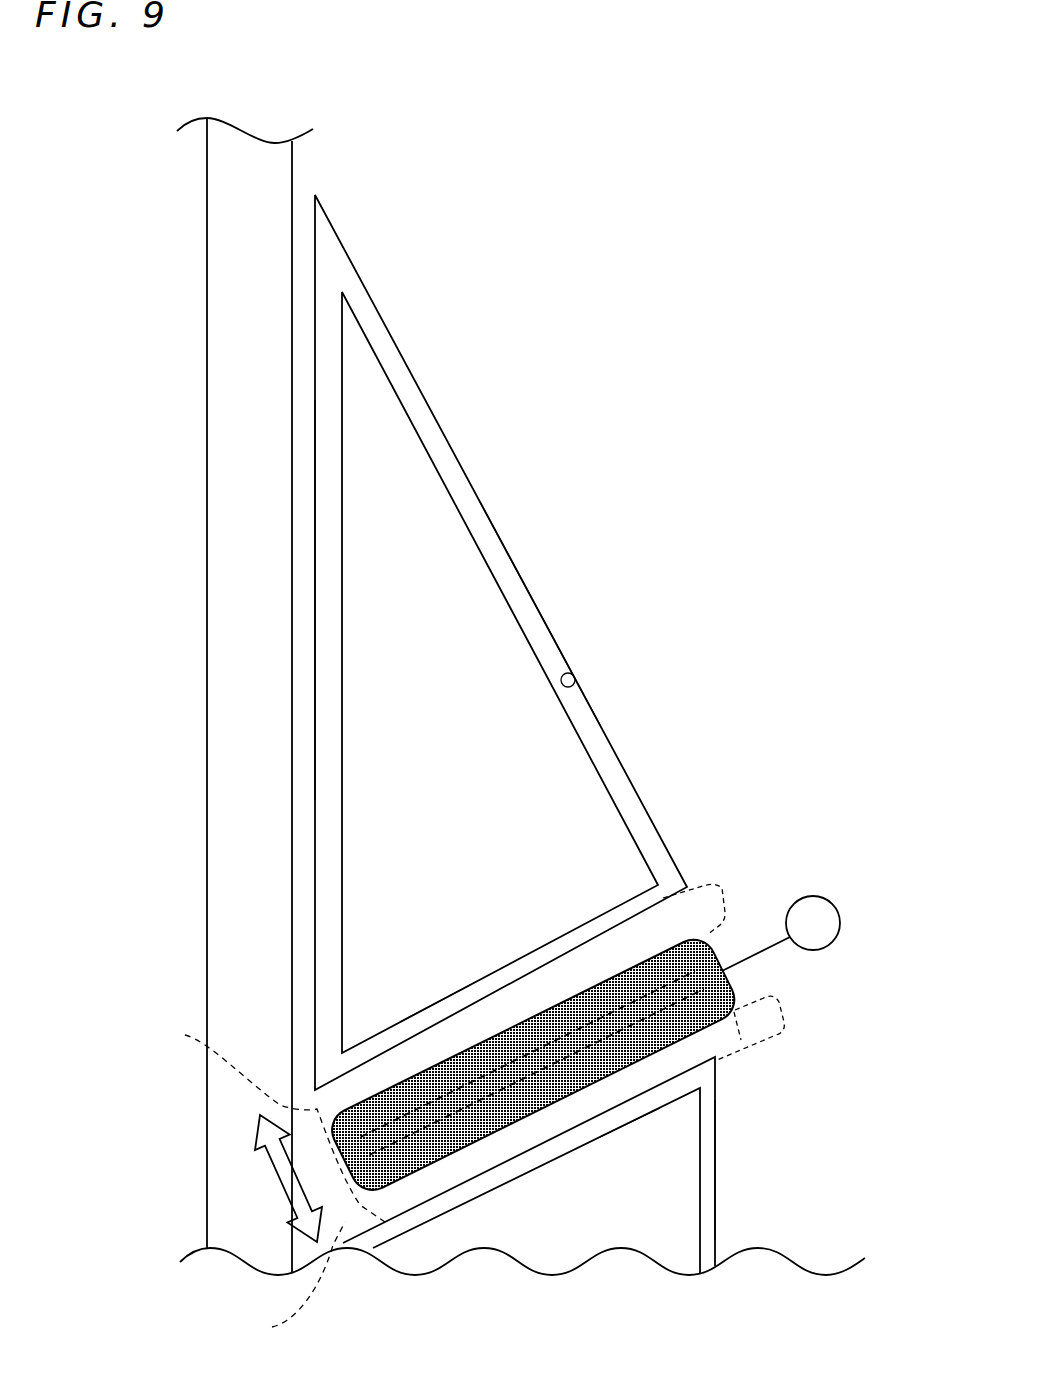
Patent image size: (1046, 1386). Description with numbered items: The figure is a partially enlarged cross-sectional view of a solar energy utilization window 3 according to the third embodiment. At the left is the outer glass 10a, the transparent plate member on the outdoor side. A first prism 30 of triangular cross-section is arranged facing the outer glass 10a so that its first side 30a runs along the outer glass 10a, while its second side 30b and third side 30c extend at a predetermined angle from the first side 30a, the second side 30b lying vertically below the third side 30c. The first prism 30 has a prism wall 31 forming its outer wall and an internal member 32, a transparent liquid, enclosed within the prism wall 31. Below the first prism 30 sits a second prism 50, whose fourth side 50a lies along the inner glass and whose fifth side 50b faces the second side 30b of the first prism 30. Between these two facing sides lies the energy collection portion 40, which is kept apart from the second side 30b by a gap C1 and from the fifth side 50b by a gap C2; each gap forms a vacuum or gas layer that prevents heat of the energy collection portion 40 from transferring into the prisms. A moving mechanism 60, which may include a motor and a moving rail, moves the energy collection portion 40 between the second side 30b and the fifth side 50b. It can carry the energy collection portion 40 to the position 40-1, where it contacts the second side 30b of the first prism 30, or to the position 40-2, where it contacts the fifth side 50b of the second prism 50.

The solar energy utilization window 3 is at (592, 172).
The outer glass 10a is at (221, 246).
The first prism 30 is at (433, 340).
The first side 30a is at (318, 607).
The second side 30b is at (425, 1025).
The third side 30c is at (568, 673).
The prism wall 31 is at (538, 647).
The internal member 32 is at (468, 595).
The energy collection portion 40 is at (621, 967).
The position of the energy collection portion in contact with the second side 40-1 is at (251, 1133).
The position of the energy collection portion in contact with the fifth side 40-2 is at (276, 1285).
The second prism 50 is at (712, 1238).
The fourth side 50a is at (714, 1204).
The fifth side 50b is at (607, 1103).
The moving mechanism 60 is at (826, 898).
The gap C1 is at (717, 906).
The gap C2 is at (769, 1023).